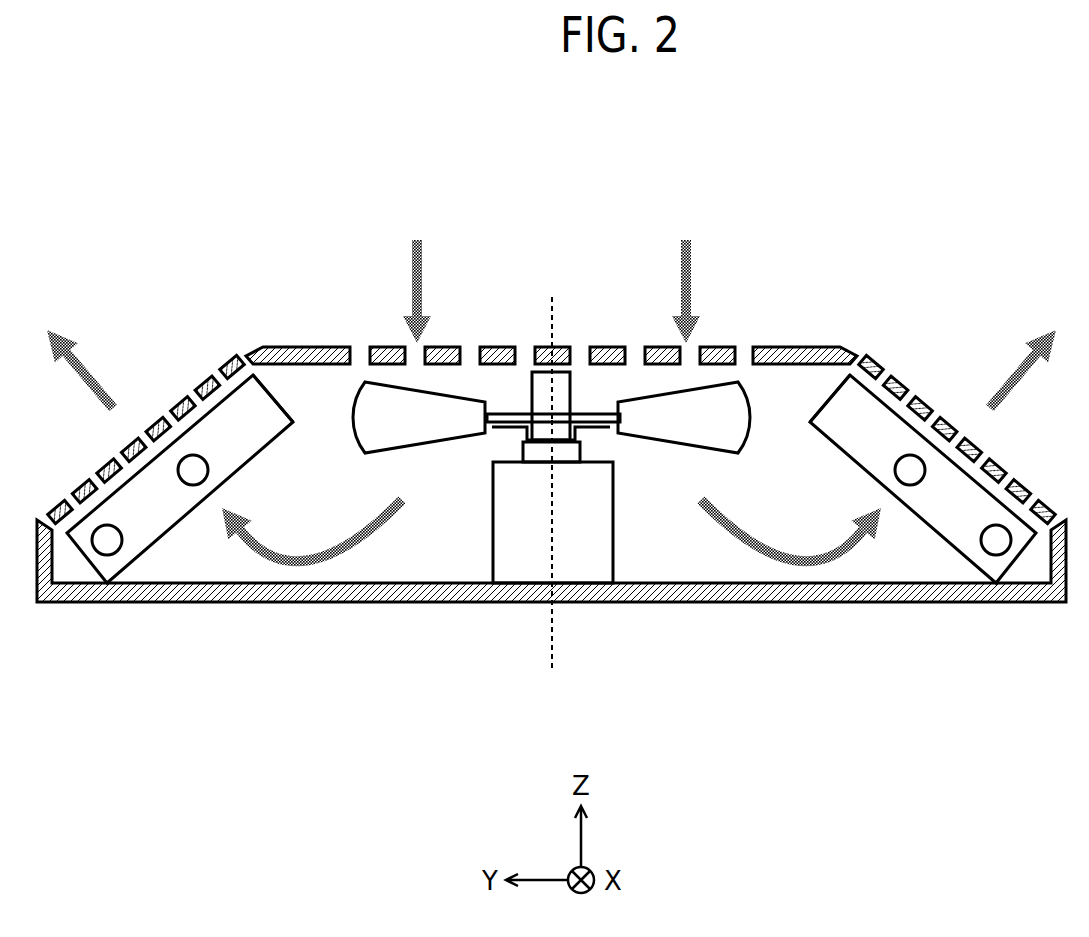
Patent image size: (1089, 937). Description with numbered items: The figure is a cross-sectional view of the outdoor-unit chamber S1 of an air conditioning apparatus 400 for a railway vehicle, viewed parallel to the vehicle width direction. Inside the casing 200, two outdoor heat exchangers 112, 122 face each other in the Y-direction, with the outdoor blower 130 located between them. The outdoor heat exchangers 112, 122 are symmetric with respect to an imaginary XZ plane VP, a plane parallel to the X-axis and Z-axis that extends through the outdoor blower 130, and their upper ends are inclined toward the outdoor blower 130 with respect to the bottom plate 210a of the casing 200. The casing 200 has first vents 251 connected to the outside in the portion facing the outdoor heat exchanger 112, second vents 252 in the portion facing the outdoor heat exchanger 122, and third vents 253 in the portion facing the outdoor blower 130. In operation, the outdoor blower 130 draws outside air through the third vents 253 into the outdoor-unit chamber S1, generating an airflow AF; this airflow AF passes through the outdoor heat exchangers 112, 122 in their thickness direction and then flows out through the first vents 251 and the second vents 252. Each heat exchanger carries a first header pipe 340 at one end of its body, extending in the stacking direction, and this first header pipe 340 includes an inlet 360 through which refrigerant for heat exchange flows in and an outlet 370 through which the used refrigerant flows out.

The outdoor heat exchanger 112 is at (262, 450).
The outdoor heat exchanger 122 is at (841, 450).
The outdoor blower 130 is at (527, 534).
The casing 200 is at (300, 347).
The bottom plate 210a is at (148, 602).
The first vents 251 is at (95, 463).
The second vents 252 is at (1008, 463).
The third vents 253 is at (473, 352).
The first header pipe 340 is at (268, 403).
The inlet 360 is at (204, 459).
The outlet 370 is at (118, 529).
The air conditioning apparatus 400 is at (558, 260).
The airflow AF is at (379, 538).
The outdoor-unit chamber S1 is at (474, 568).
The imaginary XZ plane VP is at (556, 637).